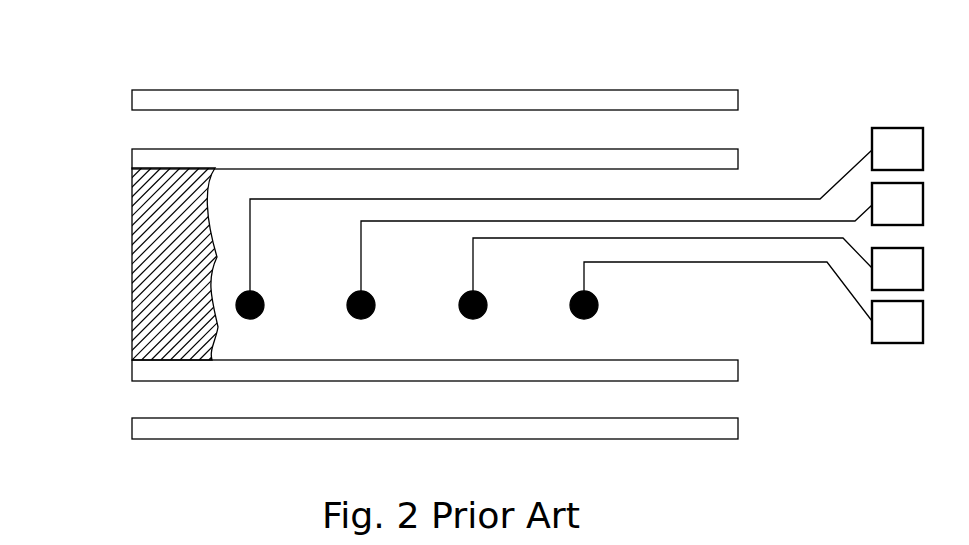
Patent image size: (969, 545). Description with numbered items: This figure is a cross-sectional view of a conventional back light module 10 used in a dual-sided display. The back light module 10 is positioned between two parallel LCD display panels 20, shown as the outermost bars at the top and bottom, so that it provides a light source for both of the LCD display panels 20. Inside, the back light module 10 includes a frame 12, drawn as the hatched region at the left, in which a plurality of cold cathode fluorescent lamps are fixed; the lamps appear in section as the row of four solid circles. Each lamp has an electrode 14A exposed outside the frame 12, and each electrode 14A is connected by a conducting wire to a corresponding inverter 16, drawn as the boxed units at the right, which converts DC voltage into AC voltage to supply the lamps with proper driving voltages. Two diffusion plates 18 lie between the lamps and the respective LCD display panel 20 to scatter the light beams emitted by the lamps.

The back light module 10 is at (110, 200).
The frame 12 is at (132, 278).
The electrode 14A is at (256, 293).
The inverter 16 is at (911, 162).
The diffusion plate 18 is at (132, 150).
The LCD display panel 20 is at (132, 90).